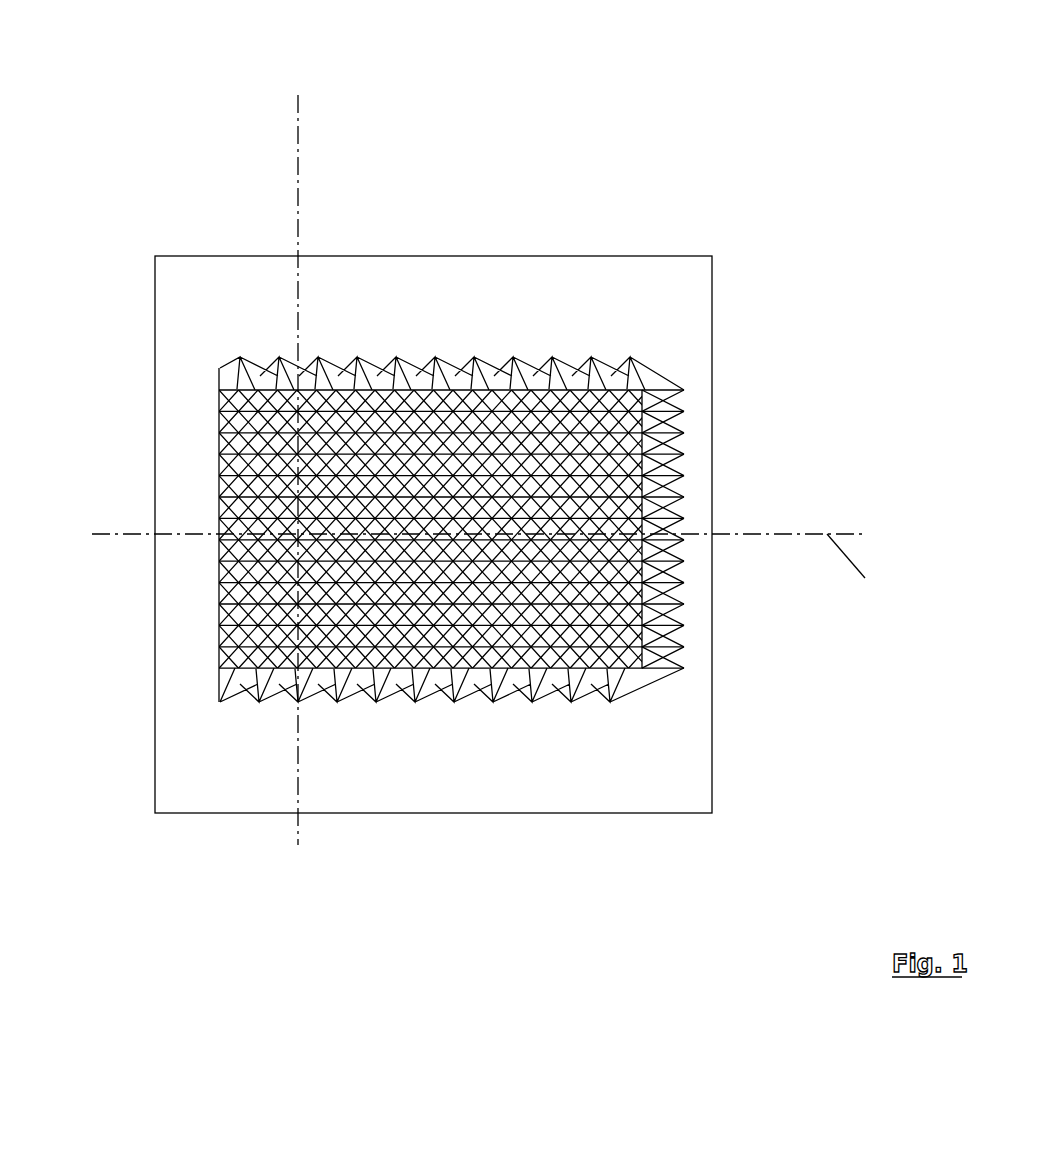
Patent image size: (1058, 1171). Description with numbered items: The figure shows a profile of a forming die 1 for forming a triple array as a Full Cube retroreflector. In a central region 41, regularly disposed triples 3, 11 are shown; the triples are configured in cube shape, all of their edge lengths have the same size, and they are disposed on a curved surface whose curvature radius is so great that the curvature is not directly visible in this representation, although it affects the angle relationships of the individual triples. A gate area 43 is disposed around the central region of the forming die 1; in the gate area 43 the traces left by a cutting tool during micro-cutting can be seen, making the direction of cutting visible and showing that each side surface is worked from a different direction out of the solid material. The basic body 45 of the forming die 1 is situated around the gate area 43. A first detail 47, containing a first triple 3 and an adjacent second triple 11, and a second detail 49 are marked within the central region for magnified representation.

The forming die 1 is at (166, 89).
The first triple 3 is at (451, 529).
The second triple 11 is at (219, 522).
The central region 41 is at (632, 462).
The gate area 43 is at (622, 682).
The basic body 45 is at (648, 765).
The first detail 47 is at (219, 500).
The second detail 49 is at (643, 413).